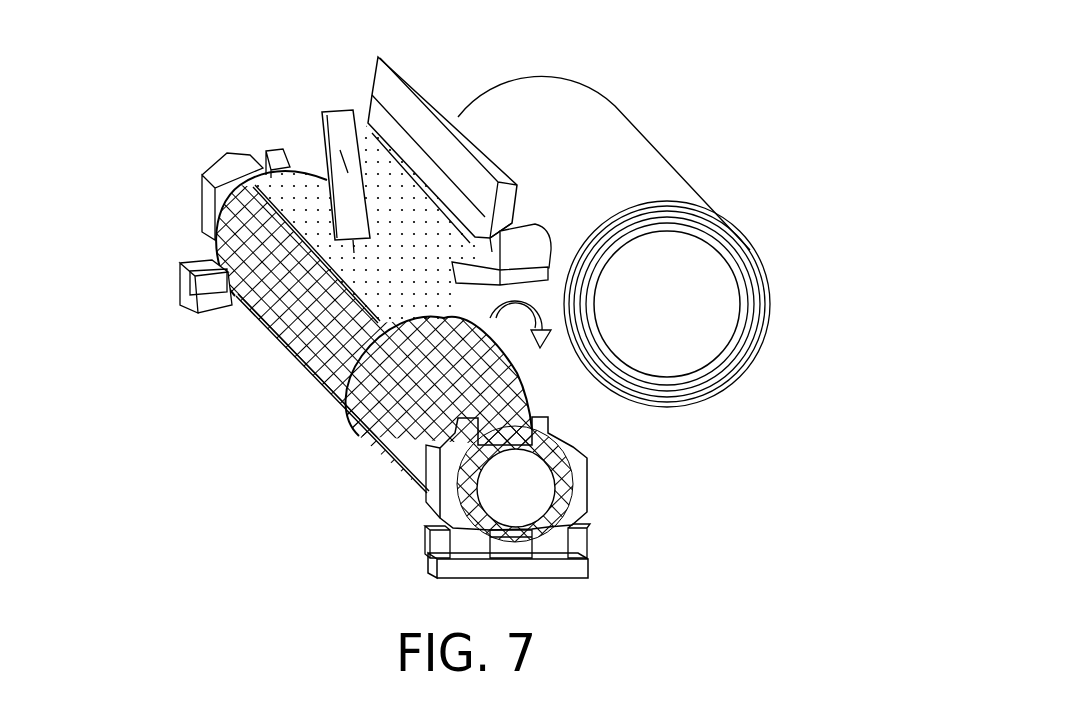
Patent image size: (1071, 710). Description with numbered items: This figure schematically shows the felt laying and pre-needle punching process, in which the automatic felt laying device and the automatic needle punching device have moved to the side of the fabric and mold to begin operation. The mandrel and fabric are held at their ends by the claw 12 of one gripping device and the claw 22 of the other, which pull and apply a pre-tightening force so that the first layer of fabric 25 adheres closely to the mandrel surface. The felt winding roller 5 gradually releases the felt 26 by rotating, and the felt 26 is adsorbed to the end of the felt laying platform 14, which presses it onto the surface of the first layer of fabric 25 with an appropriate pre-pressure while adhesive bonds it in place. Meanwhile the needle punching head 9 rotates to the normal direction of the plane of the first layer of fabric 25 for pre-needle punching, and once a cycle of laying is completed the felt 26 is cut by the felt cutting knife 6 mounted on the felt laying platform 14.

The felt winding roller 5 is at (673, 307).
The felt cutting knife 6 is at (498, 232).
The needle punching head 9 is at (347, 175).
The claw 12 is at (550, 543).
The felt laying platform 14 is at (450, 283).
The claw 22 is at (183, 275).
The first layer of fabric 25 is at (275, 347).
The felt 26 is at (697, 227).